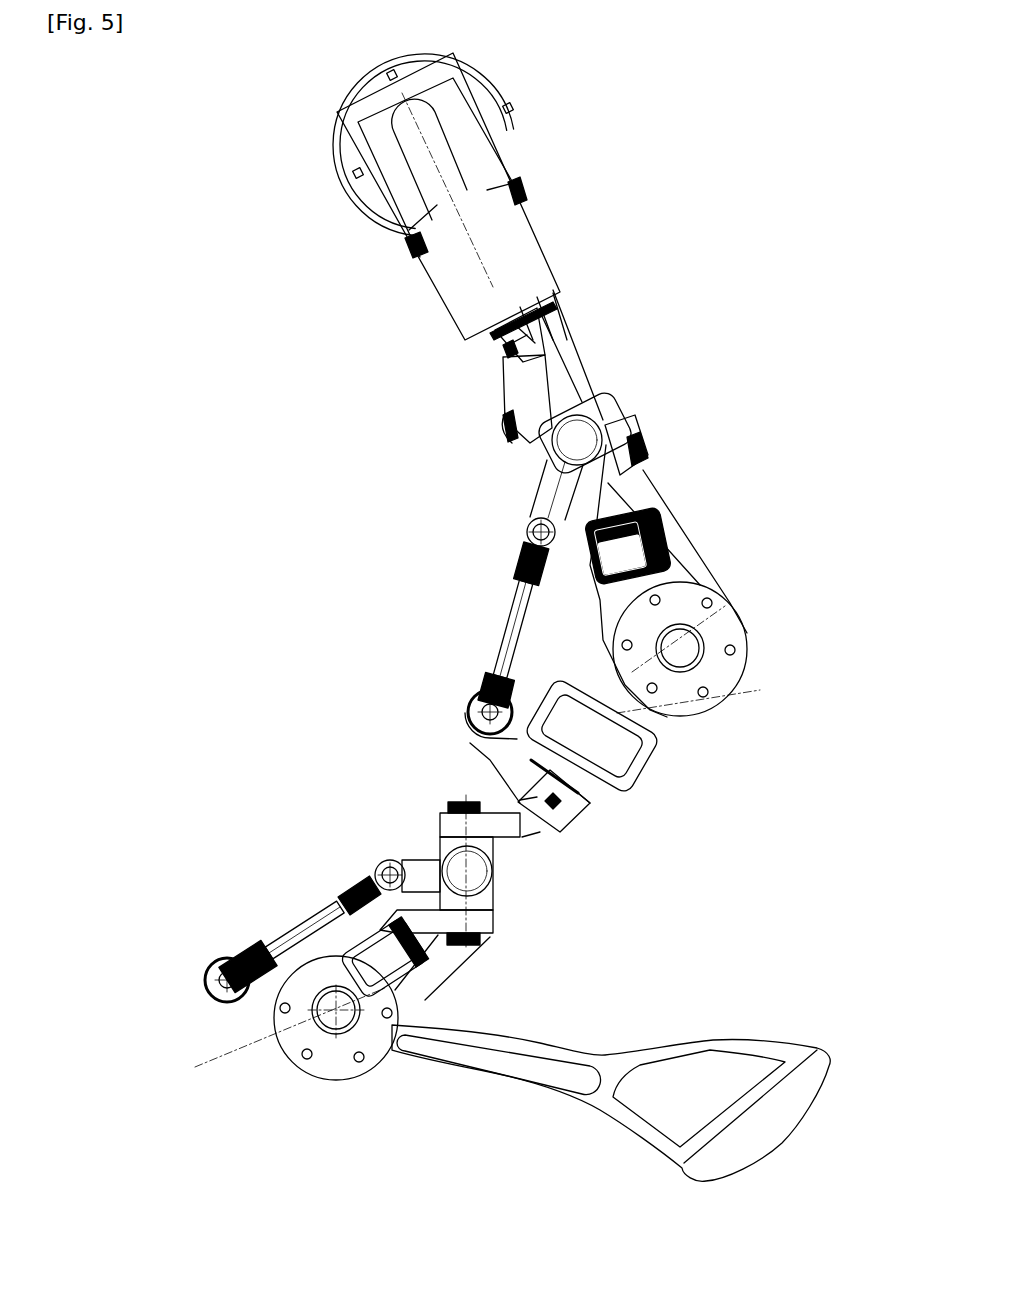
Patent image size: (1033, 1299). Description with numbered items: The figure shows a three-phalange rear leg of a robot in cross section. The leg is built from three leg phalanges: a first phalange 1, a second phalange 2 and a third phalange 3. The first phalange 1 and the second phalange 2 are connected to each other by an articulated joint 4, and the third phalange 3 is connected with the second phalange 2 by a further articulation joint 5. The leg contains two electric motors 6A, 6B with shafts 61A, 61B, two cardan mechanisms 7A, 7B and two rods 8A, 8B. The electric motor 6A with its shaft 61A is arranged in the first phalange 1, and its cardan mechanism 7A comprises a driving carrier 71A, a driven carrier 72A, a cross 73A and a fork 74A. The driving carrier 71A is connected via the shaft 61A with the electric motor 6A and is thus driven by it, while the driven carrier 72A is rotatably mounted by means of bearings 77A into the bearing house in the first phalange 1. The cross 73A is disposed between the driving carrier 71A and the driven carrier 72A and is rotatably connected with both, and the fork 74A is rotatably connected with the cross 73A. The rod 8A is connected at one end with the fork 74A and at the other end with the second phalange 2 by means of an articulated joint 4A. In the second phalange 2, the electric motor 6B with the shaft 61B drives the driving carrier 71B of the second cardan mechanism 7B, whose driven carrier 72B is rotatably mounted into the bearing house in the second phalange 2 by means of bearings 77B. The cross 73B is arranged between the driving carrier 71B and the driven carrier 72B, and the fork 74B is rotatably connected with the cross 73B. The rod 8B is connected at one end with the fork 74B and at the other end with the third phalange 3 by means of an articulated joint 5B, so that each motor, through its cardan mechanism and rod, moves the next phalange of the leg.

The first phalange 1 is at (612, 268).
The second phalange 2 is at (305, 767).
The third phalange 3 is at (552, 1103).
The articulated joint 4 is at (700, 660).
The articulated joint 4A is at (460, 700).
The articulated joint 5 is at (330, 1011).
The articulated joint 5B is at (197, 976).
The electric motor 6A is at (455, 270).
The electric motor 6B is at (612, 770).
The shaft of the electric motor 61A is at (517, 352).
The shaft of the electric motor 61B is at (552, 799).
The cardan mechanism 7A is at (610, 397).
The cardan mechanism 7B is at (430, 790).
The driving carrier 71A is at (533, 387).
The driving carrier 71B is at (514, 827).
The driven carrier 72A is at (627, 480).
The driven carrier 72B is at (497, 932).
The cross 73A is at (607, 420).
The cross 73B is at (486, 873).
The fork 74A is at (530, 505).
The fork 74B is at (382, 853).
The bearings 77A is at (660, 527).
The bearings 77B is at (355, 943).
The rod 8A is at (510, 610).
The rod 8B is at (330, 895).